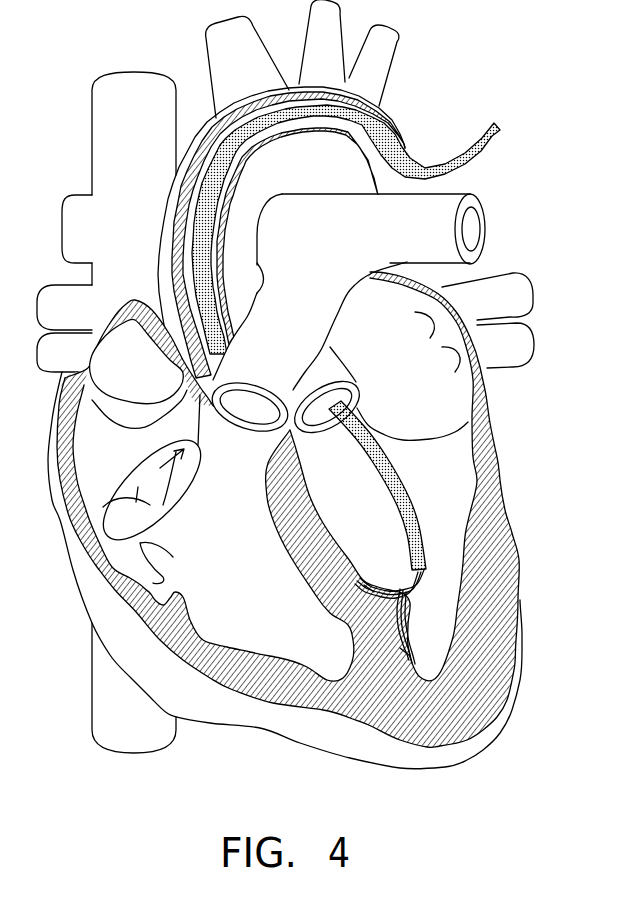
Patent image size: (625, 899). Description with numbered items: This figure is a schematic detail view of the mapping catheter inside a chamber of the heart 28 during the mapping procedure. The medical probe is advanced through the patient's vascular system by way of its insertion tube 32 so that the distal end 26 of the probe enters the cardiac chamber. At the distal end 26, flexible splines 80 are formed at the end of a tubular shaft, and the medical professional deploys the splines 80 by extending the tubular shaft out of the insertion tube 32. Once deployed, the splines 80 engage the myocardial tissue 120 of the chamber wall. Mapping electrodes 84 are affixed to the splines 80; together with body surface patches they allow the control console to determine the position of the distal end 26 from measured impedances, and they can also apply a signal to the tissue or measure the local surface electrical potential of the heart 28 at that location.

The distal end 26 is at (442, 551).
The heart 28 is at (110, 133).
The insertion tube 32 is at (480, 152).
The flexible splines 80 is at (401, 588).
The mapping electrodes 84 is at (396, 653).
The myocardial tissue 120 is at (473, 466).